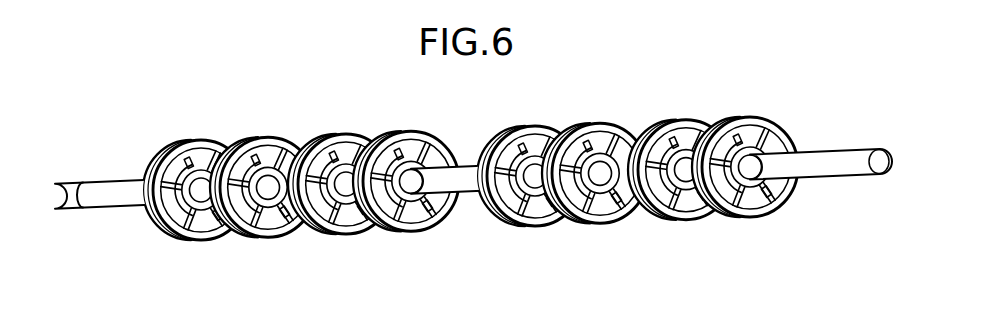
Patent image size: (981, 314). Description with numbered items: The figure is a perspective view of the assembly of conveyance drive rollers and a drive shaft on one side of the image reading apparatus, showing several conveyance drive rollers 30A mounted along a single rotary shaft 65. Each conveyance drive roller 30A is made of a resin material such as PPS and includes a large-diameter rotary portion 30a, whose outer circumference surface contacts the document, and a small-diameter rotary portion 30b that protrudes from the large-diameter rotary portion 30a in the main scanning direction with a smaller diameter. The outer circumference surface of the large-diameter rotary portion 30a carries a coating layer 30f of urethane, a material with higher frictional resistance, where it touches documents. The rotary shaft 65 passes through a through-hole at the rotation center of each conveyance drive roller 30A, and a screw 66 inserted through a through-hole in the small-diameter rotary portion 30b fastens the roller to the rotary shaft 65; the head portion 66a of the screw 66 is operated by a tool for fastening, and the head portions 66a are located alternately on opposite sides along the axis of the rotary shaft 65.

The conveyance drive roller 30A is at (473, 176).
The large-diameter rotary portion 30a is at (238, 212).
The small-diameter rotary portion 30b is at (248, 143).
The coating layer 30f is at (282, 238).
The rotary shaft 65 is at (835, 158).
The screw 66 is at (333, 153).
The head portion 66a is at (432, 213).